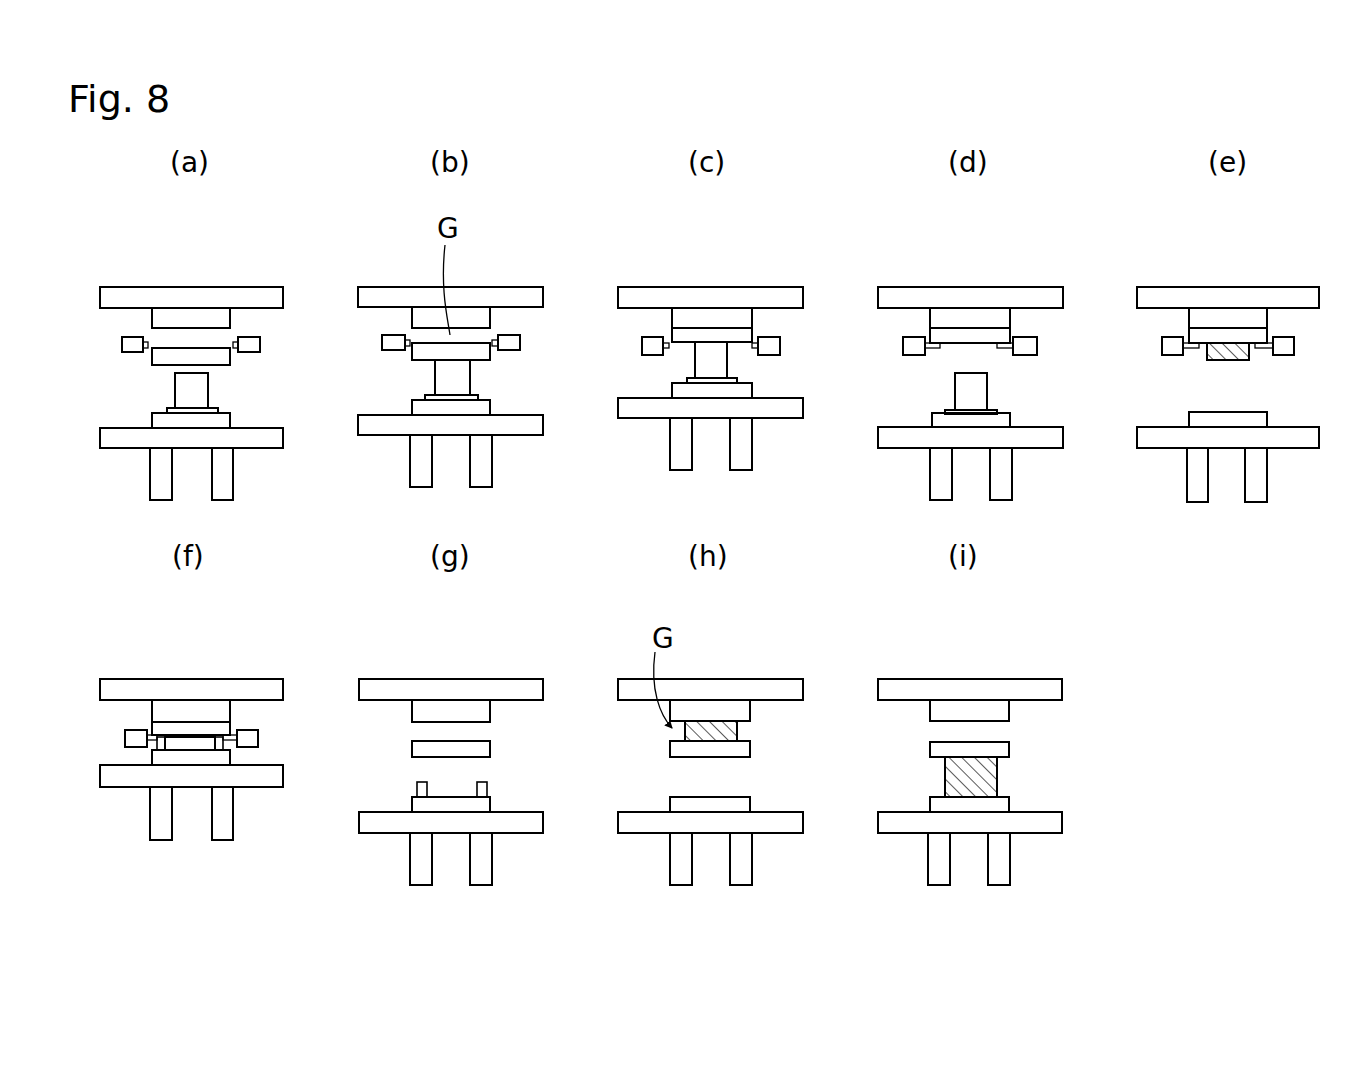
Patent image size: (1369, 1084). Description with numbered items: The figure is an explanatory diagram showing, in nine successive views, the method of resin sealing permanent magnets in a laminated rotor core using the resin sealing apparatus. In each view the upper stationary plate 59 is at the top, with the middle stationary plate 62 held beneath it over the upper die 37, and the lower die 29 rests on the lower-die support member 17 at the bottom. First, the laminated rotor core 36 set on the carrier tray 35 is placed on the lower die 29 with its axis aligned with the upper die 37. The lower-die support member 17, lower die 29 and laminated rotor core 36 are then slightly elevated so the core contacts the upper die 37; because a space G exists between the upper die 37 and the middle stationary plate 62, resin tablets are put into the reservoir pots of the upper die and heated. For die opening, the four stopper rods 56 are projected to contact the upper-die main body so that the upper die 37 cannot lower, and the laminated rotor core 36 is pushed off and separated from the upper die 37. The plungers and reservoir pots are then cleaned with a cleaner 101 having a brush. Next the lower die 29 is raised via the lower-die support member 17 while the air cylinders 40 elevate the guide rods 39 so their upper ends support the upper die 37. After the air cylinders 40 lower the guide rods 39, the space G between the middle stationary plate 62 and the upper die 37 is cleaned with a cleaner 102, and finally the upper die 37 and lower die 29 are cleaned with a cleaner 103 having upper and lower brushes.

The lower-die support member 17 is at (258, 438).
The lower die 29 is at (225, 420).
The carrier tray 35 is at (172, 410).
The laminated rotor core 36 is at (198, 388).
The upper die 37 is at (160, 355).
The guide rods 39 is at (225, 742).
The air cylinders 40 is at (160, 815).
The stopper rods 56 is at (237, 345).
The upper stationary plate 59 is at (223, 296).
The middle stationary plate 62 is at (222, 318).
The cleaner 101 is at (1235, 358).
The cleaner 102 is at (710, 730).
The cleaner 103 is at (965, 775).